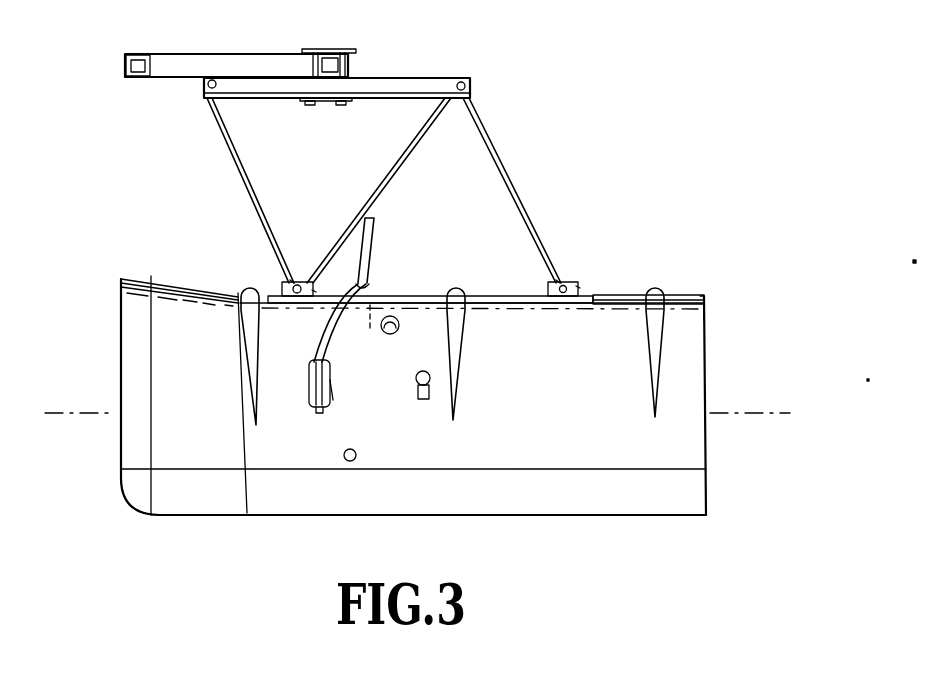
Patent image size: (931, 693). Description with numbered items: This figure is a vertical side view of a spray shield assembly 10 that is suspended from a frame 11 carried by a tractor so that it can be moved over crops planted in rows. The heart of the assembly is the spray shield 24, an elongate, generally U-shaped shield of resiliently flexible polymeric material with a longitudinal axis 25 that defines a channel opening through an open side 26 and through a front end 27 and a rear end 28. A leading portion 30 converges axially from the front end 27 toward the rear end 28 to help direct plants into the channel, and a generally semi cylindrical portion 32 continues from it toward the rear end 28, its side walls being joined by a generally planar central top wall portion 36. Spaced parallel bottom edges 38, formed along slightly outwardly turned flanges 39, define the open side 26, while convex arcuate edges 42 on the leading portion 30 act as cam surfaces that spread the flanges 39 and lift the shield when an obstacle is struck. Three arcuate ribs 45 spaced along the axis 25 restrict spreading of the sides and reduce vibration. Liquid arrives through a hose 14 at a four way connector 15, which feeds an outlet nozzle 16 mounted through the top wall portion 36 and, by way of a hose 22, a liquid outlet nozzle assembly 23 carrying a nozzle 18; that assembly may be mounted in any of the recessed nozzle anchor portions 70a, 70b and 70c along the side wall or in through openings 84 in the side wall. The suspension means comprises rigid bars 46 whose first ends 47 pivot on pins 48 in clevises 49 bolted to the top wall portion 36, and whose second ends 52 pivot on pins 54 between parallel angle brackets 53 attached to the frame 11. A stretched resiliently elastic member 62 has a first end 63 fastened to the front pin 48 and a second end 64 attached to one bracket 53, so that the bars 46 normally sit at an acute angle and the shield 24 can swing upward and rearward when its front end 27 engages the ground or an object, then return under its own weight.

The spray shield assembly 10 is at (512, 104).
The frame 11 is at (207, 56).
The hose 14 is at (375, 229).
The four way connector 15 is at (374, 285).
The liquid outlet nozzle 16 is at (361, 334).
The liquid outlet nozzle 18 is at (322, 415).
The hose 22 is at (322, 332).
The liquid outlet nozzle assembly 23 is at (300, 412).
The spray shield 24 is at (702, 362).
The longitudinal axis 25 is at (765, 413).
The open side 26 is at (284, 517).
The front end 27 is at (120, 320).
The rear end 28 is at (708, 318).
The leading portion 30 is at (173, 287).
The generally semi cylindrical portion 32 is at (618, 318).
The central top wall portion 36 is at (437, 294).
The bottom edges 38 is at (527, 517).
The flanges 39 is at (648, 500).
The convex arcuate edges 42 is at (135, 512).
The arcuate ribs 45 is at (245, 347).
The rigid bars 46 is at (250, 182).
The first ends 47 is at (282, 280).
The pins 48 is at (297, 281).
The clevises 49 is at (581, 284).
The second ends 52 is at (212, 106).
The angle brackets 53 is at (410, 82).
The pins 54 is at (203, 88).
The resiliently elastic member 62 is at (396, 162).
The first end 63 is at (318, 287).
The second end 64 is at (433, 104).
The nozzle anchor portion 70a is at (405, 322).
The nozzle anchor portion 70b is at (338, 397).
The nozzle anchor portion 70c is at (427, 402).
The through openings 84 is at (356, 451).